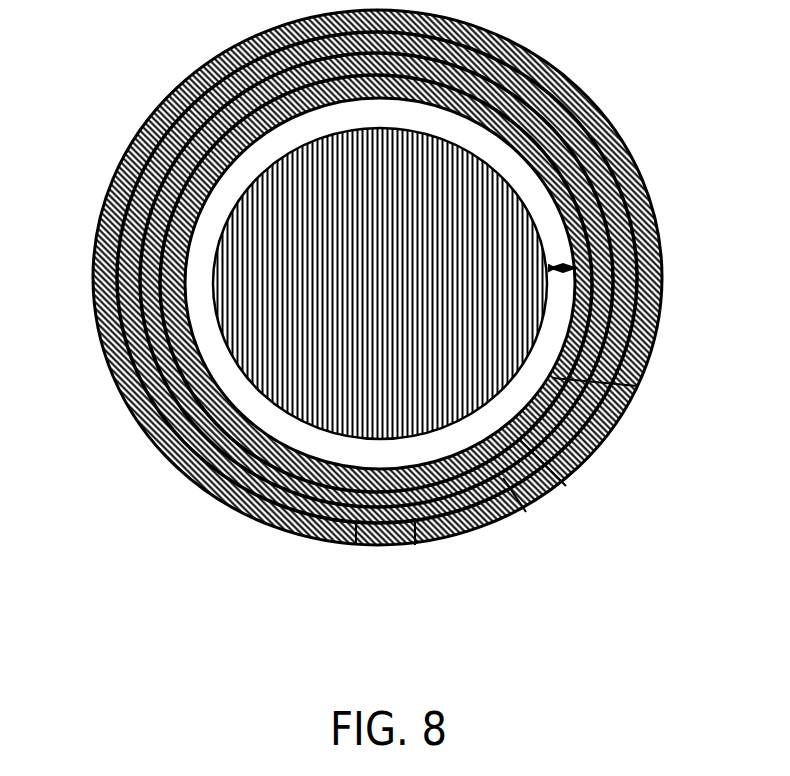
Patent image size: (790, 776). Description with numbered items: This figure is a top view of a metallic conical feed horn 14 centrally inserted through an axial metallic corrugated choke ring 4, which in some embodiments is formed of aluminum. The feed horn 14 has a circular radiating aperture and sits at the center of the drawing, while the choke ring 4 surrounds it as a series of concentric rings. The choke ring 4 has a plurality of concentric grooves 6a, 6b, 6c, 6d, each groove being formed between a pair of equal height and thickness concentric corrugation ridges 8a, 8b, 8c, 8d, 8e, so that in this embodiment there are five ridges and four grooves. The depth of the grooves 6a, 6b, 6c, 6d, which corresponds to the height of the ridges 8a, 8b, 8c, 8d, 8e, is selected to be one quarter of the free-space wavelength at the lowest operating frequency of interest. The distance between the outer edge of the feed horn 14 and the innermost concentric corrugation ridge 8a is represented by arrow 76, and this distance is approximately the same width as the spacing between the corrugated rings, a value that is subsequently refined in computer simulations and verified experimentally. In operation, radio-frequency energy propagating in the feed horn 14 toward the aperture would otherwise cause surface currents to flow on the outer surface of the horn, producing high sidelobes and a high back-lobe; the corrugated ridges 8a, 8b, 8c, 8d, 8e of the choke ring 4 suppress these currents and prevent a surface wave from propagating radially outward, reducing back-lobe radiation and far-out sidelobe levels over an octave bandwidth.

The axial metallic corrugated choke ring 4 is at (489, 530).
The concentric groove 6a is at (194, 406).
The concentric groove 6b is at (141, 242).
The concentric groove 6c is at (153, 153).
The concentric groove 6d is at (97, 318).
The concentric corrugation ridge 8a is at (637, 386).
The concentric corrugation ridge 8b is at (566, 486).
The concentric corrugation ridge 8c is at (526, 512).
The concentric corrugation ridge 8d is at (415, 545).
The concentric corrugation ridge 8e is at (356, 545).
The metallic conical feed horn 14 is at (387, 444).
The arrow 76 is at (565, 266).